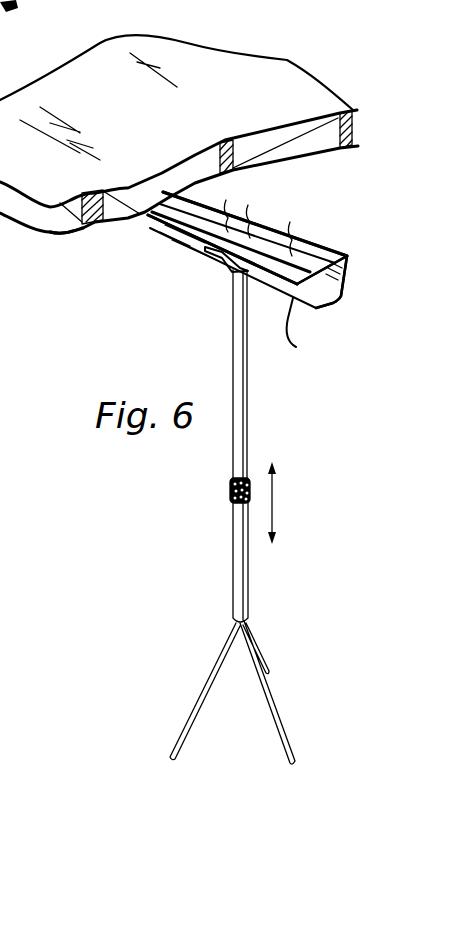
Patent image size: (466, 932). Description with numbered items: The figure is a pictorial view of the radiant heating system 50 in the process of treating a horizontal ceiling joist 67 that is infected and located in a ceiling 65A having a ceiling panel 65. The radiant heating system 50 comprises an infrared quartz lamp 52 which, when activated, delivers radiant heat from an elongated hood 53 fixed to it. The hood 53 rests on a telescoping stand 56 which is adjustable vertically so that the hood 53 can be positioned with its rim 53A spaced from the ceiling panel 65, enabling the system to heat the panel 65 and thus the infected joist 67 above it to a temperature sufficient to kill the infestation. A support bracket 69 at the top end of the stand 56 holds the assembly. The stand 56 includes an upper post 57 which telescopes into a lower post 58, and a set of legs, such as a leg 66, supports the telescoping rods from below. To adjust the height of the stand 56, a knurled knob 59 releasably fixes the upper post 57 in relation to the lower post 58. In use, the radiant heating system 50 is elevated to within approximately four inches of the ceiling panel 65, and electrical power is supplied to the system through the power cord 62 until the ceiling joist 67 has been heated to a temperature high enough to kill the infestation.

The radiant heating system 50 is at (285, 216).
The infrared quartz lamp 52 is at (298, 243).
The hood 53 is at (176, 236).
The rim 53A is at (288, 222).
The telescoping stand 56 is at (229, 597).
The upper post 57 is at (233, 437).
The lower post 58 is at (233, 545).
The knurled knob 59 is at (230, 492).
The power cord 62 is at (296, 347).
The ceiling panel 65 is at (278, 152).
The ceiling 65A is at (63, 236).
The leg 66 is at (204, 688).
The horizontal ceiling joist 67 is at (227, 140).
The support bracket 69 is at (226, 264).